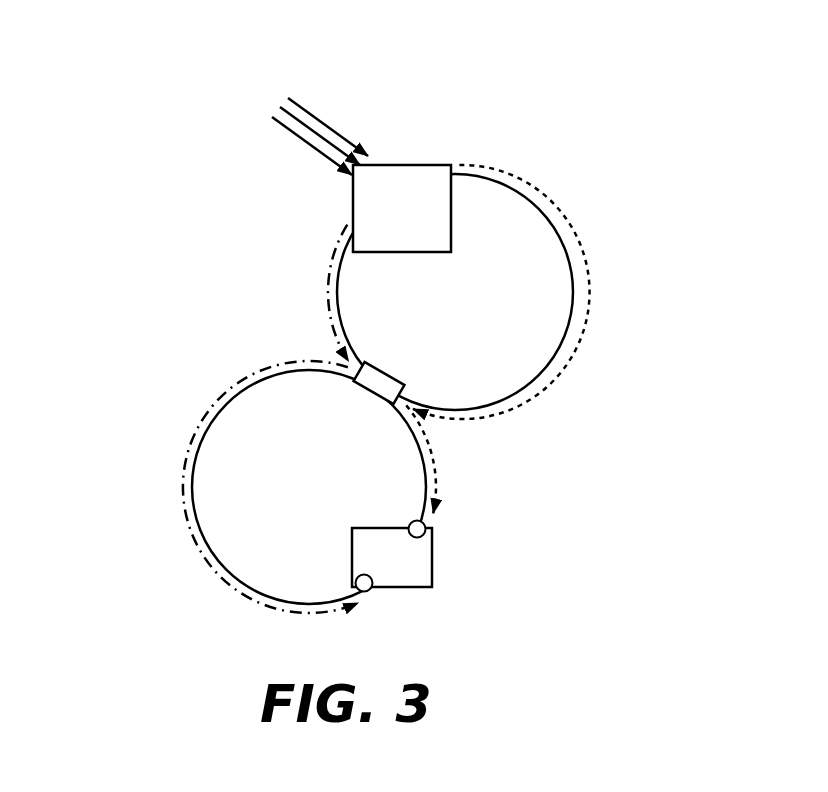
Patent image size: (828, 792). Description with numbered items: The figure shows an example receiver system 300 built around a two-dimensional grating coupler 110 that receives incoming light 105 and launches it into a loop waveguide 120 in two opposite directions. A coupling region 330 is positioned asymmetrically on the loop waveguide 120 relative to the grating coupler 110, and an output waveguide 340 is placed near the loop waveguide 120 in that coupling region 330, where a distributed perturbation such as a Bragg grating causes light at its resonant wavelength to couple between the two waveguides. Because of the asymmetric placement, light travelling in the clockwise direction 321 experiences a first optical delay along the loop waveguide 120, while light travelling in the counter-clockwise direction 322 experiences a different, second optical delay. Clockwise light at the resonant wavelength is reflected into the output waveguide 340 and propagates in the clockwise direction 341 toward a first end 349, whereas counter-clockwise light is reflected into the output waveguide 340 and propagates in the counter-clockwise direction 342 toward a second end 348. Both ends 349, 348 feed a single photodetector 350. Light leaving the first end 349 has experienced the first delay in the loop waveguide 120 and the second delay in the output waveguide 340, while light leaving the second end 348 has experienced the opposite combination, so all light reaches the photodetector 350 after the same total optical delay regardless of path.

The receiver system 300 is at (222, 54).
The optical fiber / input light 105 is at (316, 114).
The two-dimensional grating coupler 110 is at (410, 165).
The loop waveguide 120 is at (510, 187).
The first optical delay L1 / clockwise direction 321 is at (583, 262).
The second optical delay L2 / counter-clockwise direction 322 is at (341, 226).
The coupling region 330 is at (392, 372).
The output waveguide 340 is at (430, 498).
The clockwise direction (second optical delay L2 in output waveguide) 341 is at (437, 470).
The counter-clockwise direction (first optical delay L1 in output waveguide) 342 is at (254, 374).
The second end of the output waveguide 348 is at (365, 573).
The first end of the output waveguide 349 is at (410, 521).
The photodetector 350 is at (433, 570).